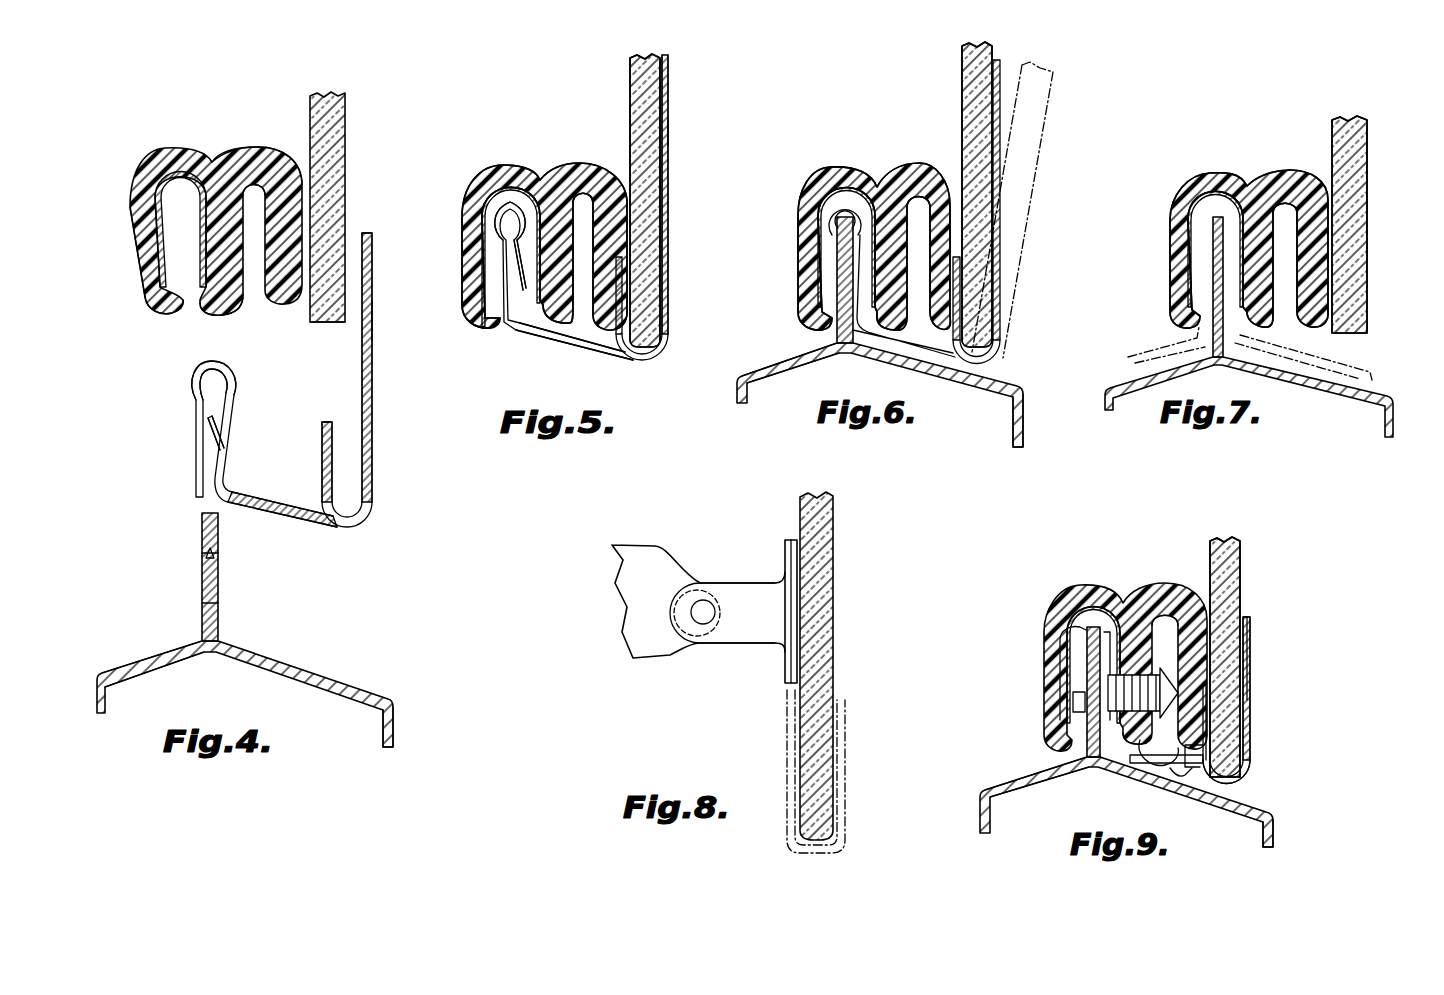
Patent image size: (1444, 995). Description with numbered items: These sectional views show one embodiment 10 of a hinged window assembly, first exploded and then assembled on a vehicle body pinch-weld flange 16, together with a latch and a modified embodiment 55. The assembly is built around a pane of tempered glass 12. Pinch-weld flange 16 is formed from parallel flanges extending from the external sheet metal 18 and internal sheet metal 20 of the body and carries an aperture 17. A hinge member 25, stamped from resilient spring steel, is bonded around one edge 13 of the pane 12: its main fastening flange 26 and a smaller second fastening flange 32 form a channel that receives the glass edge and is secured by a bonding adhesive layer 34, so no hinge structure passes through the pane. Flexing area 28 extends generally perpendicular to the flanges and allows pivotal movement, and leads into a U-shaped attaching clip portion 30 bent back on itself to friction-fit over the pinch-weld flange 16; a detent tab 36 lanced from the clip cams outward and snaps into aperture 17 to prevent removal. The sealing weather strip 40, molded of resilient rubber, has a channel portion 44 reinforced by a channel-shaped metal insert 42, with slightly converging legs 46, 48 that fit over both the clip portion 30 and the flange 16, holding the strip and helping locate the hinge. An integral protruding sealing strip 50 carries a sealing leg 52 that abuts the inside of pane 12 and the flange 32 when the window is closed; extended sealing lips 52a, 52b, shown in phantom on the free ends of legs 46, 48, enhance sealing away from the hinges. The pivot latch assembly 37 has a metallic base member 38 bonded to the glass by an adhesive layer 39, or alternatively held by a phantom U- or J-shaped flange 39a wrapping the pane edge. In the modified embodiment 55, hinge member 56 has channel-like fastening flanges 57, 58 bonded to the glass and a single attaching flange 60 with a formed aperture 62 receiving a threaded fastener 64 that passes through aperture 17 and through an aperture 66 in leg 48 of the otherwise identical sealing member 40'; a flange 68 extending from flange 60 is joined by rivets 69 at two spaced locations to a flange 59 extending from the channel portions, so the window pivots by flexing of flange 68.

In FIG. 5, the hinged window assembly 10 is at (566, 89).
In FIG. 6, the hinged window assembly 10 is at (897, 92).
In FIG. 7, the hinged window assembly 10 is at (1395, 117).
In FIG. 4, the window pane 12 is at (343, 110).
In FIG. 5, the window pane 12 is at (630, 80).
In FIG. 6, the window pane 12 is at (962, 96).
In FIG. 7, the window pane 12 is at (1370, 167).
In FIG. 8, the window pane 12 is at (820, 541).
In FIG. 9, the window pane 12 is at (1230, 551).
In FIG. 4, the edge of window pane 13 is at (322, 323).
In FIG. 4, the pinch-weld flange 16 is at (200, 536).
In FIG. 6, the pinch-weld flange 16 is at (843, 224).
In FIG. 7, the pinch-weld flange 16 is at (1210, 227).
In FIG. 9, the pinch-weld flange 16 is at (1087, 639).
In FIG. 4, the aperture 17 is at (213, 561).
In FIG. 9, the aperture 17 is at (1097, 719).
In FIG. 4, the external sheet metal 18 is at (393, 720).
In FIG. 6, the external sheet metal 18 is at (1007, 383).
In FIG. 9, the external sheet metal 18 is at (1273, 829).
In FIG. 4, the internal sheet metal 20 is at (103, 672).
In FIG. 6, the internal sheet metal 20 is at (745, 377).
In FIG. 9, the internal sheet metal 20 is at (982, 801).
In FIG. 4, the hinge member 25 is at (382, 483).
In FIG. 5, the hinge member 25 is at (678, 236).
In FIG. 6, the hinge member 25 is at (1011, 247).
In FIG. 4, the fastening flange 26 is at (373, 322).
In FIG. 5, the fastening flange 26 is at (670, 133).
In FIG. 4, the flexing area 28 is at (293, 516).
In FIG. 5, the flexing area 28 is at (557, 338).
In FIG. 4, the attaching clip portion 30 is at (190, 371).
In FIG. 5, the attaching clip portion 30 is at (482, 214).
In FIG. 4, the second fastening flange 32 is at (322, 450).
In FIG. 4, the bonding adhesive layer 34 is at (337, 423).
In FIG. 5, the bonding adhesive layer 34 is at (668, 78).
In FIG. 6, the bonding adhesive layer 34 is at (1000, 92).
In FIG. 9, the bonding adhesive layer 34 is at (1243, 617).
In FIG. 4, the detent tab 36 is at (216, 430).
In FIG. 5, the detent tab 36 is at (518, 292).
In FIG. 8, the pivot latch assembly 37 is at (680, 551).
In FIG. 8, the metallic base member 38 is at (750, 590).
In FIG. 8, the bonding adhesive layer 39 is at (797, 540).
In FIG. 8, the U or J-shaped flange 39a is at (783, 741).
In FIG. 4, the sealing weather strip 40 is at (216, 185).
In FIG. 5, the sealing weather strip 40 is at (544, 224).
In FIG. 6, the sealing weather strip 40 is at (874, 218).
In FIG. 7, the sealing weather strip 40 is at (1249, 222).
In FIG. 9, the sealing member 40' is at (1125, 640).
In FIG. 4, the reinforcing insert 42 is at (190, 170).
In FIG. 5, the reinforcing insert 42 is at (492, 190).
In FIG. 4, the channel portion 44 is at (134, 294).
In FIG. 4, the channel leg 46 is at (167, 318).
In FIG. 5, the channel leg 46 is at (480, 326).
In FIG. 4, the channel leg 48 is at (222, 317).
In FIG. 5, the channel leg 48 is at (587, 305).
In FIG. 9, the channel leg 48 is at (1130, 741).
In FIG. 4, the sealing strip 50 is at (272, 134).
In FIG. 4, the sealing leg 52 is at (260, 217).
In FIG. 5, the sealing leg 52 is at (600, 254).
In FIG. 6, the sealing leg 52 is at (950, 277).
In FIG. 7, the sealing leg 52 is at (1310, 257).
In FIG. 7, the extended sealing lip 52a is at (1157, 340).
In FIG. 7, the extended sealing lip 52b is at (1340, 362).
In FIG. 9, the modified hinged window assembly 55 is at (1335, 550).
In FIG. 9, the hinge member 56 is at (1261, 624).
In FIG. 9, the fastening flange 57 is at (1253, 671).
In FIG. 9, the central fastening flange 58 is at (1203, 704).
In FIG. 9, the flange 59 is at (1187, 771).
In FIG. 9, the attaching flange 60 is at (1132, 600).
In FIG. 9, the formed aperture 62 is at (1107, 674).
In FIG. 9, the threaded fastener 64 is at (1077, 707).
In FIG. 9, the aperture 66 is at (1162, 660).
In FIG. 9, the flange 68 is at (1203, 757).
In FIG. 9, the rivets 69 is at (1157, 770).